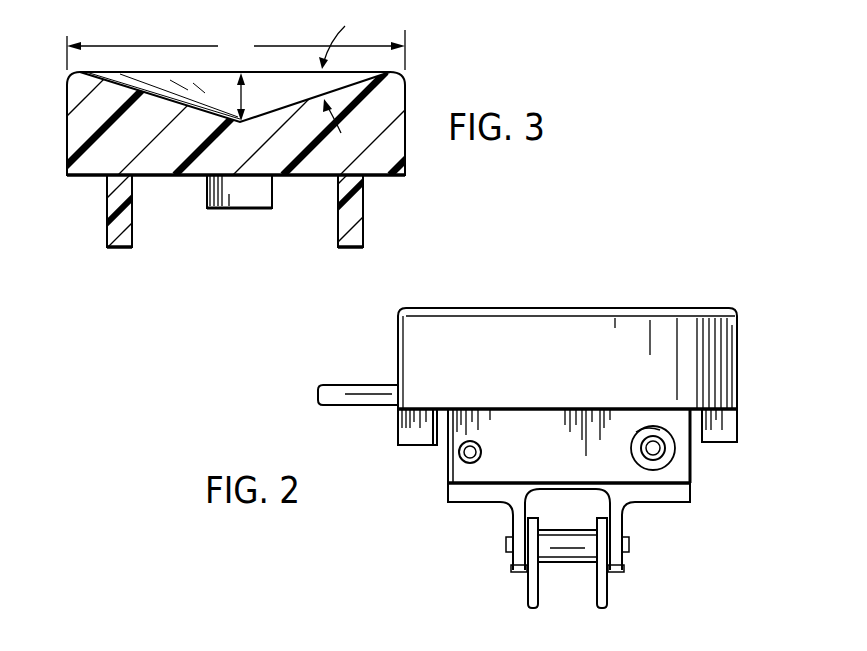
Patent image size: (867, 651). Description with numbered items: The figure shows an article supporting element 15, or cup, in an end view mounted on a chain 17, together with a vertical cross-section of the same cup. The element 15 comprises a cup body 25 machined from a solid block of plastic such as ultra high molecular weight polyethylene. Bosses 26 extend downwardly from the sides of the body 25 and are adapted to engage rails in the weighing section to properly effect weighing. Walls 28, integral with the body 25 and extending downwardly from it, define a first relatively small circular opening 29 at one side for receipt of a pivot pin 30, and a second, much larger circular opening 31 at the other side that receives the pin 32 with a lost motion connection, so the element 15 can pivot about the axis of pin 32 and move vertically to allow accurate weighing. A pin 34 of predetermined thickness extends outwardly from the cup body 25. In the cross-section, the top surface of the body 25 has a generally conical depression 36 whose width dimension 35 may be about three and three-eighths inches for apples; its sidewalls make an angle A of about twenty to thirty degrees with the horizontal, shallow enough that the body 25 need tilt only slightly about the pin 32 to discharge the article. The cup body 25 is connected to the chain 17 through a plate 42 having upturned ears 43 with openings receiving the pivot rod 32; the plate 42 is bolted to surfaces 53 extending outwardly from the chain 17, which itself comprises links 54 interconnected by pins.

In FIG. 3, the article supporting element 15 is at (62, 21).
In FIG. 2, the article supporting element 15 is at (744, 260).
In FIG. 3, the cup body 25 is at (70, 138).
In FIG. 2, the cup body 25 is at (726, 357).
In FIG. 3, the bosses 26 is at (247, 199).
In FIG. 2, the bosses 26 is at (401, 434).
In FIG. 3, the walls 28 is at (133, 231).
In FIG. 2, the walls 28 is at (574, 473).
In FIG. 2, the first generally circular opening 29 is at (481, 446).
In FIG. 2, the pivot pin 30 is at (463, 454).
In FIG. 2, the second generally circular opening 31 is at (632, 447).
In FIG. 2, the pin 32 is at (664, 450).
In FIG. 2, the pin 34 is at (345, 389).
In FIG. 3, the dimension of depression 35 is at (236, 50).
In FIG. 3, the depression 36 is at (281, 102).
In FIG. 3, the angle A is at (328, 79).
In FIG. 2, the plate 42 is at (448, 491).
In FIG. 2, the upturned ears 43 is at (689, 482).
In FIG. 2, the surfaces 53 is at (471, 495).
In FIG. 2, the links 54 is at (531, 592).
In FIG. 2, the chain 17 is at (618, 581).